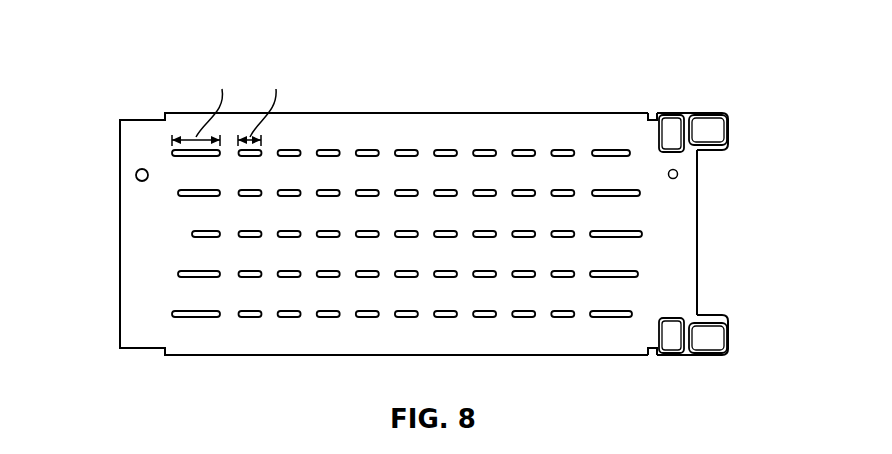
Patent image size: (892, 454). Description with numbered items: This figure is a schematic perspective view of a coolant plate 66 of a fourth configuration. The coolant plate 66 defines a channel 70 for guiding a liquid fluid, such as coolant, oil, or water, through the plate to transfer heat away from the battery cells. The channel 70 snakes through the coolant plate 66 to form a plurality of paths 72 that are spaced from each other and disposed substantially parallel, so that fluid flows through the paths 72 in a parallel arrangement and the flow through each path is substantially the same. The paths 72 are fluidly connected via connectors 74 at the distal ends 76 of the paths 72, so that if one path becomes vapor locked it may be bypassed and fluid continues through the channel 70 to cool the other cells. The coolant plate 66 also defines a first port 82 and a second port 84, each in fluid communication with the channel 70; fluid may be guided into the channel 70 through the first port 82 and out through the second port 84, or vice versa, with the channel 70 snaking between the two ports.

The coolant plate 66 is at (166, 32).
The channel 70 is at (498, 233).
The paths 72 is at (620, 175).
The connectors 74 is at (177, 237).
The distal ends 76 is at (146, 108).
The first port 82 is at (712, 337).
The second port 84 is at (712, 130).